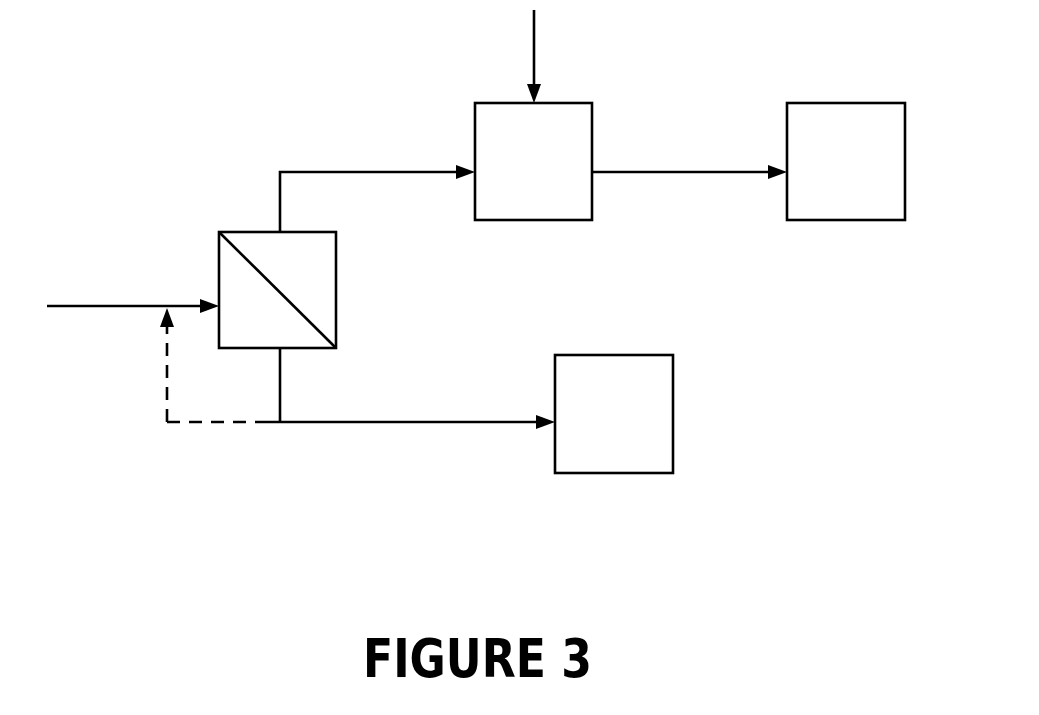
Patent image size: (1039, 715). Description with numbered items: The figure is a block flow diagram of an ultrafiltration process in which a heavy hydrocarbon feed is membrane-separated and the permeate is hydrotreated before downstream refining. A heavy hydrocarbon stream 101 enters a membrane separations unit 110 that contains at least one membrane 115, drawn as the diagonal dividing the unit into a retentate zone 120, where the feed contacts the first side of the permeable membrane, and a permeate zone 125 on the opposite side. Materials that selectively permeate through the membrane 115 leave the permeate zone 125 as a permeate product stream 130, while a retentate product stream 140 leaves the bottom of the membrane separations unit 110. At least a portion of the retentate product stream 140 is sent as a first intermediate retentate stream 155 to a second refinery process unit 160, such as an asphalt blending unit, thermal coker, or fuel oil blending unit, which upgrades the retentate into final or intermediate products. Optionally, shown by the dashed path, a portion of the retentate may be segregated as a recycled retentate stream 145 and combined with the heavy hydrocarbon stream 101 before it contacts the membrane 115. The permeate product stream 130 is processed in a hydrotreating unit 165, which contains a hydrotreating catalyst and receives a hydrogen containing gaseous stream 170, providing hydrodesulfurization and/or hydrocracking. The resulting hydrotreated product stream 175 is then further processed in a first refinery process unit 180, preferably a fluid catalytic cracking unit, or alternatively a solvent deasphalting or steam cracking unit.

The heavy hydrocarbon stream 101 is at (108, 298).
The membrane separations unit 110 is at (342, 352).
The membrane 115 is at (303, 310).
The retentate zone 120 is at (295, 335).
The permeate zone 125 is at (322, 257).
The permeate product stream 130 is at (323, 160).
The retentate product stream 140 is at (290, 402).
The recycled retentate stream 145 is at (225, 427).
The first intermediate retentate stream 155 is at (437, 430).
The second refinery process unit 160 is at (618, 448).
The hydrotreating unit 165 is at (562, 197).
The hydrogen containing gaseous stream 170 is at (540, 62).
The hydrotreated product stream 175 is at (657, 160).
The first refinery process unit 180 is at (863, 127).